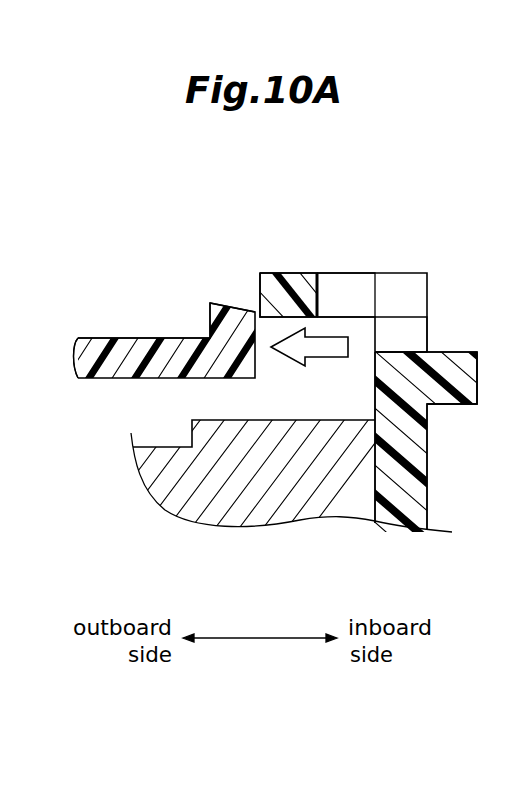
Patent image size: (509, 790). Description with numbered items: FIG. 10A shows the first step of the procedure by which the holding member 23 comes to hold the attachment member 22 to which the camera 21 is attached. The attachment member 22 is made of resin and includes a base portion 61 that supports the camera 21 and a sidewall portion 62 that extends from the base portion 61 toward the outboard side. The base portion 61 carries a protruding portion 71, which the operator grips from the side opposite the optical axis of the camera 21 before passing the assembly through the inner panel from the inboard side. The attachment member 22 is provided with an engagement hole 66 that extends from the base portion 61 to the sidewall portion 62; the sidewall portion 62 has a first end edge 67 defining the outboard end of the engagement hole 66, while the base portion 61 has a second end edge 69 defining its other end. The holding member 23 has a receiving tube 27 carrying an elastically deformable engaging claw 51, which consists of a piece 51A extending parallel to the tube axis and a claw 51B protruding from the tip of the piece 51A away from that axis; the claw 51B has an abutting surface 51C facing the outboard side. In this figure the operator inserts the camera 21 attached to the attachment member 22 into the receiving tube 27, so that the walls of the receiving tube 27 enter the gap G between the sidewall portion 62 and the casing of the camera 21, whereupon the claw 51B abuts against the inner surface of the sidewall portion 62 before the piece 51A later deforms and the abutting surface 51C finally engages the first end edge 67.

The camera 21 is at (193, 529).
The attachment member 22 is at (400, 266).
The holding member 23 is at (100, 319).
The receiving tube 27 is at (83, 324).
The engaging claw 51 is at (100, 374).
The piece 51A is at (120, 357).
The claw 51B is at (232, 311).
The abutting surface 51C is at (207, 328).
The base portion 61 is at (423, 466).
The sidewall portion 62 is at (291, 272).
The engagement hole 66 is at (400, 310).
The first end edge 67 is at (320, 297).
The second end edge 69 is at (390, 352).
The protruding portion 71 is at (440, 405).
The gap G is at (318, 394).